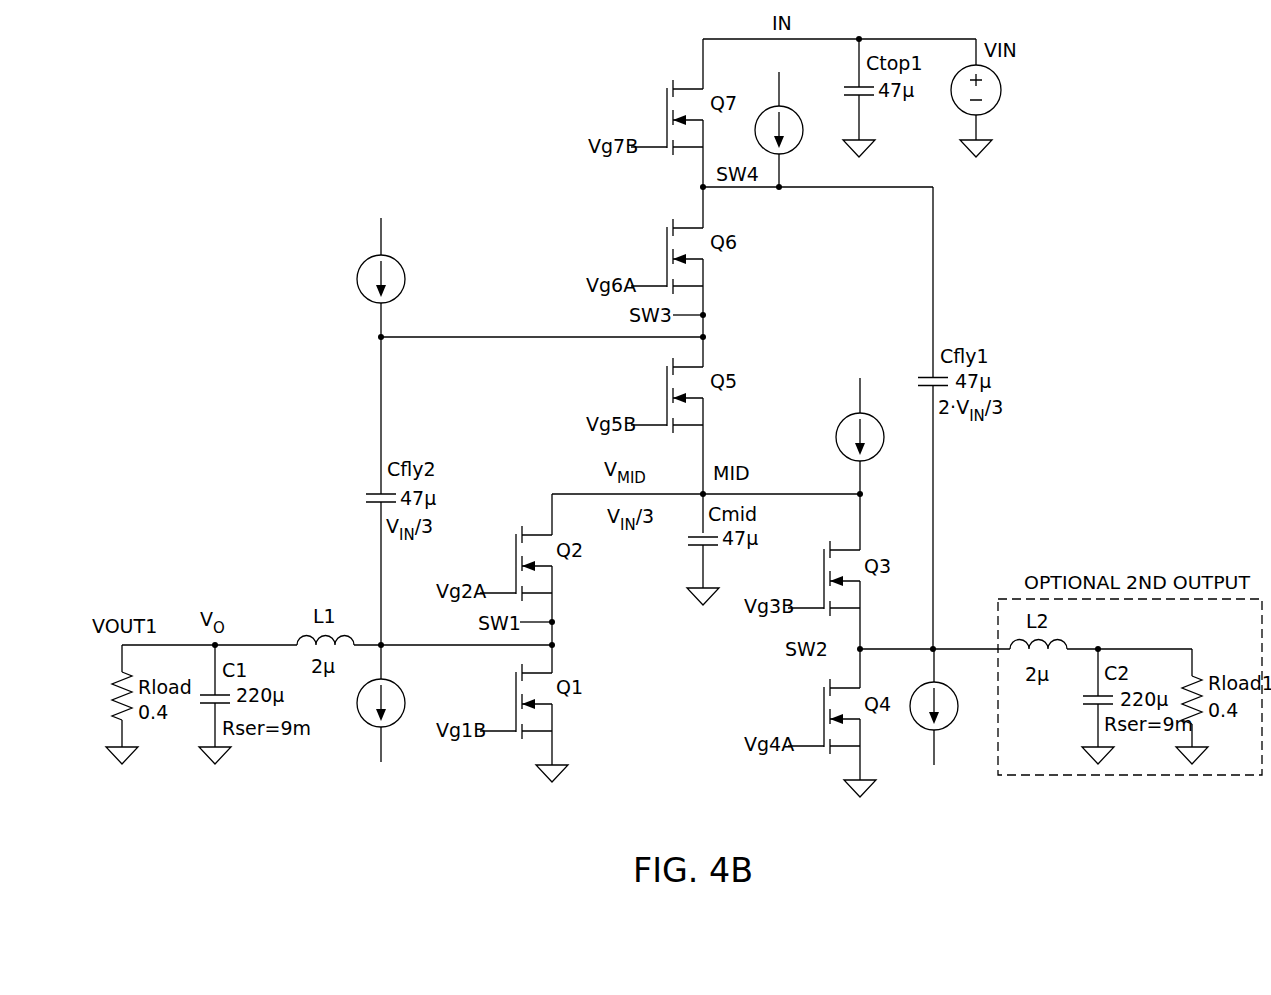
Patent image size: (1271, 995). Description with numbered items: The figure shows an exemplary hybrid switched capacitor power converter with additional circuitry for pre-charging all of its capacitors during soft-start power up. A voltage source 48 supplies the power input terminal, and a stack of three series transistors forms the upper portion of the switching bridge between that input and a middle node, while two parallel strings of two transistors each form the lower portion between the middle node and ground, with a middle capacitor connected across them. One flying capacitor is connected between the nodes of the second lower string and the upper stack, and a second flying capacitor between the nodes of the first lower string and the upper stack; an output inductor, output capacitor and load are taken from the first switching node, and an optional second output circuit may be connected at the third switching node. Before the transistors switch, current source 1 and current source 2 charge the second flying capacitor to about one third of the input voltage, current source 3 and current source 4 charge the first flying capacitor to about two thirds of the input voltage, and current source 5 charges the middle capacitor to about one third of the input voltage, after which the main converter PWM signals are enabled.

The input voltage source VIN 48 is at (984, 98).
The current source I1 1 is at (388, 277).
The current source I2 2 is at (390, 703).
The current source I3 3 is at (786, 129).
The current source I4 4 is at (943, 707).
The current source I5 5 is at (869, 436).